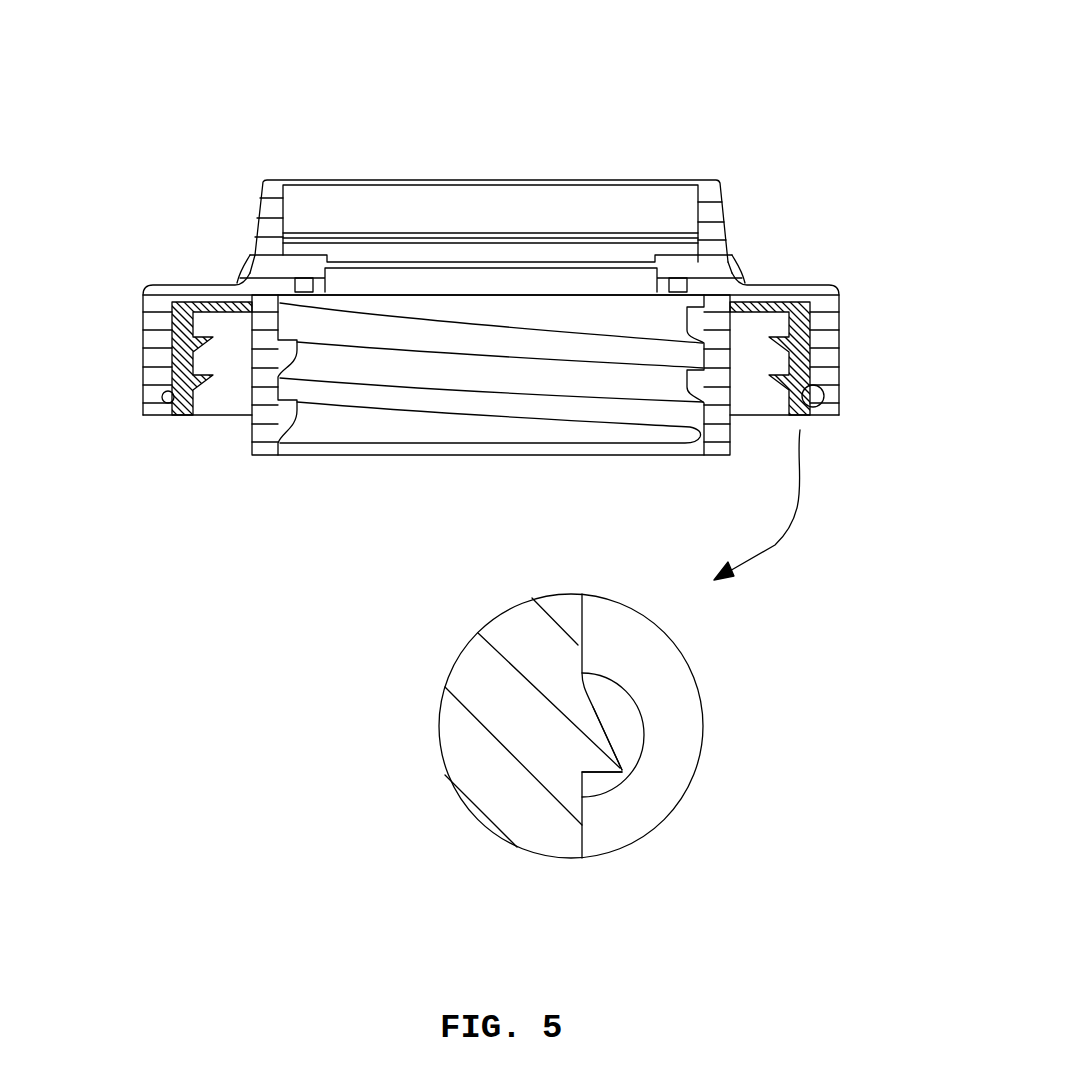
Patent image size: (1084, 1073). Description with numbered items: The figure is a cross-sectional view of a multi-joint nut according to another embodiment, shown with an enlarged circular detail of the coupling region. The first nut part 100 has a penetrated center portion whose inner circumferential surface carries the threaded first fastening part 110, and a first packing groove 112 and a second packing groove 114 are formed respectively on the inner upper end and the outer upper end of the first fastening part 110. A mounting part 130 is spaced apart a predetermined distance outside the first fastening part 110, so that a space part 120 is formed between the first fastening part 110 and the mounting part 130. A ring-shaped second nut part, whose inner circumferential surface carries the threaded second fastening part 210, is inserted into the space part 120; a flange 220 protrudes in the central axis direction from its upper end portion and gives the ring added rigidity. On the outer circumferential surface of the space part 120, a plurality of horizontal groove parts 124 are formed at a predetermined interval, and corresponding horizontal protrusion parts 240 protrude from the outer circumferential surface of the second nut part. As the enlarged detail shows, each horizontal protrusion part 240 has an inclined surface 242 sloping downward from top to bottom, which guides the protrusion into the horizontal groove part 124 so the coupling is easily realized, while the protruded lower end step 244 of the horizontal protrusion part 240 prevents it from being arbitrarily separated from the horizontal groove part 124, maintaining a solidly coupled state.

The first nut part 100 is at (850, 288).
The first fastening part 110 is at (263, 457).
The first packing groove 112 is at (247, 262).
The second packing groove 114 is at (310, 253).
The space part 120 is at (755, 405).
The horizontal groove part 124 is at (627, 720).
The mounting part 130 is at (143, 347).
The second fastening part 210 is at (187, 413).
The flange 220 is at (767, 293).
The horizontal protrusion part 240 is at (593, 712).
The inclined surface 242 is at (605, 718).
The lower end step 244 is at (602, 772).